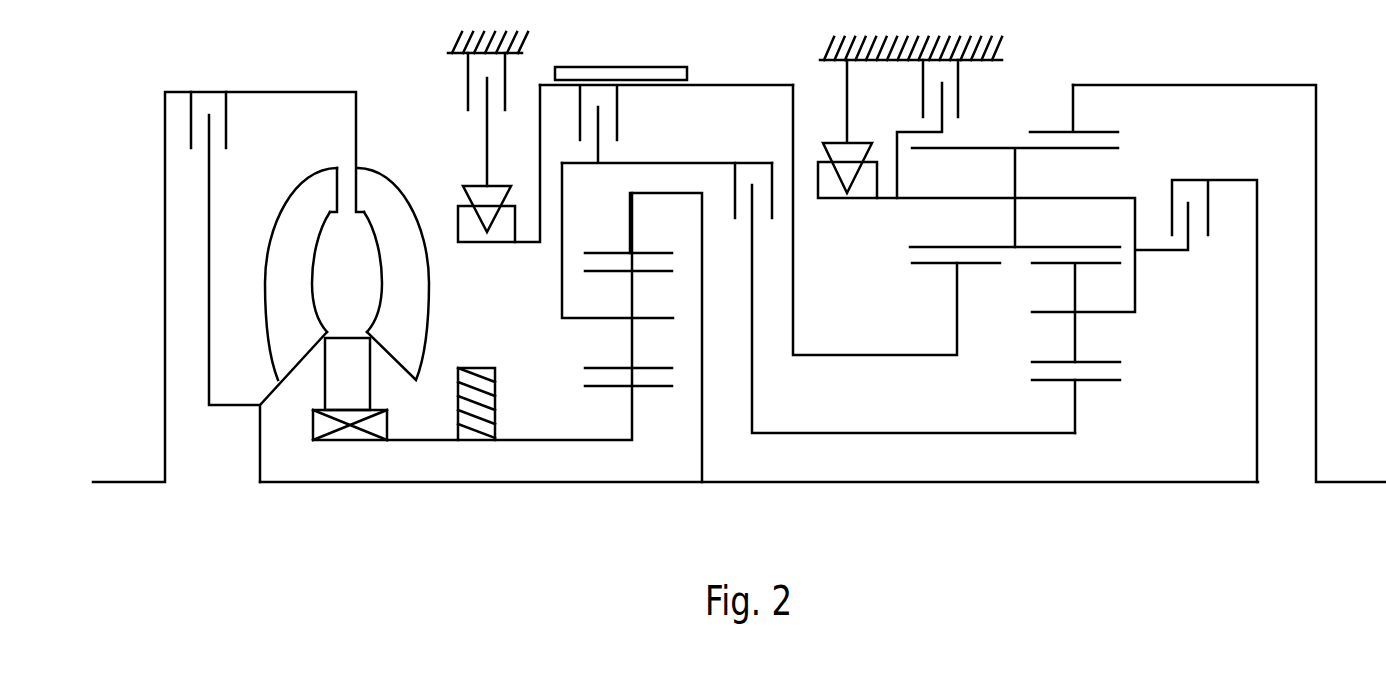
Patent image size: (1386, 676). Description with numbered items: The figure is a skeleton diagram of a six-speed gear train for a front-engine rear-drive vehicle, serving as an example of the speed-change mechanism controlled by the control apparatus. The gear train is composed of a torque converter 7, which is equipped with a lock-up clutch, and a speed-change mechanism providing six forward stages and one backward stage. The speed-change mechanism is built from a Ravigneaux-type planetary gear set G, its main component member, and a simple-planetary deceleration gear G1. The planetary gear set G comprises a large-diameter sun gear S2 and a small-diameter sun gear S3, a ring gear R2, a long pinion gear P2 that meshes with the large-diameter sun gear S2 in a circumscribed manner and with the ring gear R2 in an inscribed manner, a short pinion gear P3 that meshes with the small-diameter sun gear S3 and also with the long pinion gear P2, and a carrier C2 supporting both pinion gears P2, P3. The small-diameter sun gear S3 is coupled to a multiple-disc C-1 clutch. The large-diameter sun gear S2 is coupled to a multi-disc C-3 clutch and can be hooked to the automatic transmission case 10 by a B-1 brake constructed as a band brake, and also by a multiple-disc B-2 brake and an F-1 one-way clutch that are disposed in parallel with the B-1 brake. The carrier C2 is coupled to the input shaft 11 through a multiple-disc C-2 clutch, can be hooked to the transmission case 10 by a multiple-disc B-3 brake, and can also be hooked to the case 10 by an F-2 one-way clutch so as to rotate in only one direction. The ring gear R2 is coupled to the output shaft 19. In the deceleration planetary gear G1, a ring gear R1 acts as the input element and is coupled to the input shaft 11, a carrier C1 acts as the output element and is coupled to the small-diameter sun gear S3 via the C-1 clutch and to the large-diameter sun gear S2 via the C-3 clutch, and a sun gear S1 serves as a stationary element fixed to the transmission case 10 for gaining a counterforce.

The torque converter 7 is at (275, 88).
The automatic transmission case 10 is at (517, 42).
The input shaft 11 is at (598, 483).
The output shaft 19 is at (1347, 485).
The B-1 brake B-1 is at (655, 66).
The B-2 brake B-2 is at (467, 77).
The B-3 brake B-3 is at (922, 85).
The C-1 clutch C-1 is at (772, 185).
The C-2 clutch C-2 is at (1188, 178).
The C-3 clutch C-3 is at (617, 117).
The F-1 one-way clutch F-1 is at (485, 243).
The F-2 one-way clutch F-2 is at (845, 200).
The deceleration planetary gear G1 is at (532, 298).
The planetary gear set G is at (1047, 62).
The ring gear R1 is at (645, 252).
The carrier C1 is at (593, 320).
The sun gear S1 is at (610, 387).
The ring gear R2 is at (1060, 130).
The long pinion gear P2 is at (957, 148).
The carrier C2 is at (925, 198).
The large-diameter sun gear S2 is at (930, 267).
The short pinion gear P3 is at (1108, 362).
The small-diameter sun gear S3 is at (1047, 385).